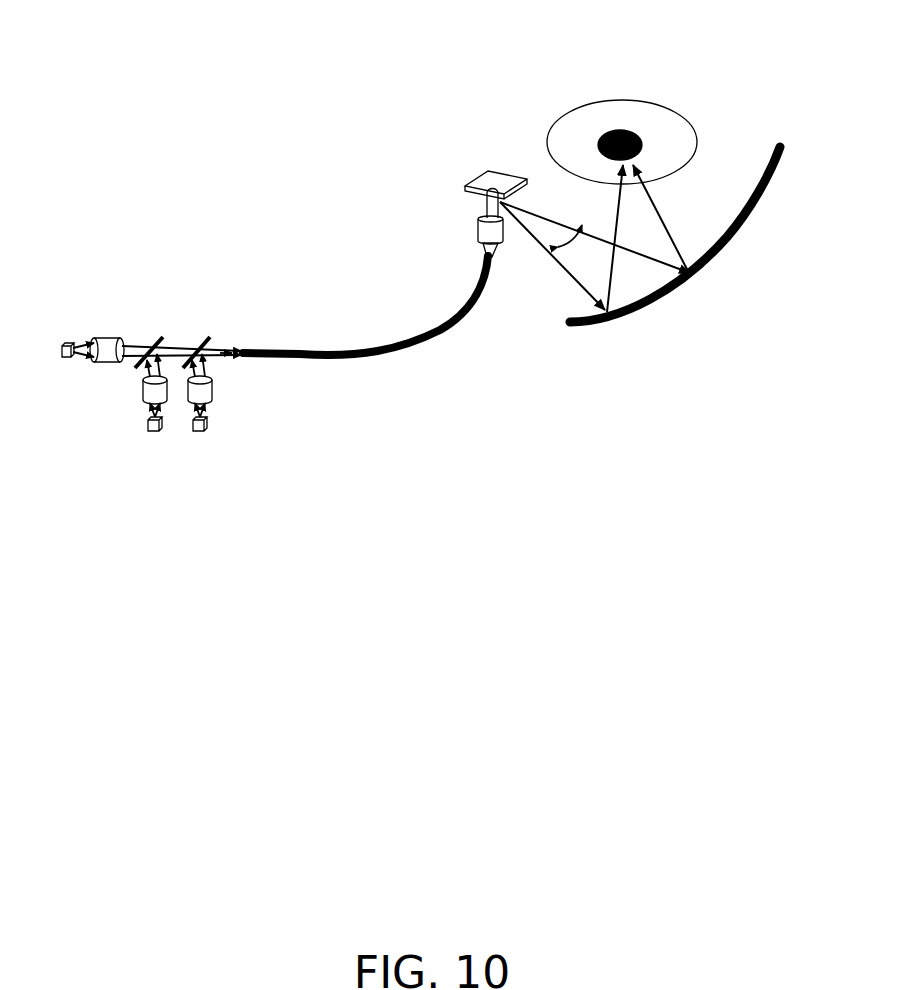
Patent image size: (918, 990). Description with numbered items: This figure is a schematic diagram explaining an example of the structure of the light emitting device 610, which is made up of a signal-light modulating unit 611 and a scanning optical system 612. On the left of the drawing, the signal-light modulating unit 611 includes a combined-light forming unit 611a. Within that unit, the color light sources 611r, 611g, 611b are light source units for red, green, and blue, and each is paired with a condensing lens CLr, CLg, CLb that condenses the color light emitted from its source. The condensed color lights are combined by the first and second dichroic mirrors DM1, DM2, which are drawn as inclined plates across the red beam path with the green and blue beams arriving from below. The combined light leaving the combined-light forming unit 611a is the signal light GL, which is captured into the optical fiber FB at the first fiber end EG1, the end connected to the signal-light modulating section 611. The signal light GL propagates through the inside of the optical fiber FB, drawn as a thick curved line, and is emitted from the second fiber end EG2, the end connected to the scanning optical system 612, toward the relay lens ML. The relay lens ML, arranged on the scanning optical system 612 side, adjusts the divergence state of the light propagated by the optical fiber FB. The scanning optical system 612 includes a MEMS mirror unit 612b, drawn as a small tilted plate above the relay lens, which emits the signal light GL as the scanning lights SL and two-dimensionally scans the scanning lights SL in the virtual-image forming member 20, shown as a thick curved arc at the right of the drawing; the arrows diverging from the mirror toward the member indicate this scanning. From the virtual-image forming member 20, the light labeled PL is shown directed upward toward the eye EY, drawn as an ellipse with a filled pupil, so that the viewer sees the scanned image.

The light emitting device 610 is at (430, 128).
The signal-light modulating unit 611 is at (288, 412).
The combined-light forming unit 611a is at (120, 412).
The color light source 611r is at (68, 341).
The color light source 611g is at (155, 432).
The color light source 611b is at (200, 432).
The condensing lens CLr is at (112, 338).
The condensing lens CLg is at (143, 391).
The condensing lens CLb is at (212, 391).
The first dichroic mirror DM1 is at (150, 336).
The second dichroic mirror DM2 is at (197, 335).
The signal light GL is at (487, 200).
The optical fiber FB is at (343, 351).
The first fiber end EG1 is at (245, 351).
The second fiber end EG2 is at (483, 248).
The relay lens ML is at (478, 228).
The scanning optical system 612 is at (452, 172).
The MEMS mirror unit 612b is at (491, 172).
The scanning lights SL is at (545, 248).
The projected light PL is at (520, 350).
The virtual-image forming member 20 is at (706, 266).
The eye of viewer EY is at (580, 130).